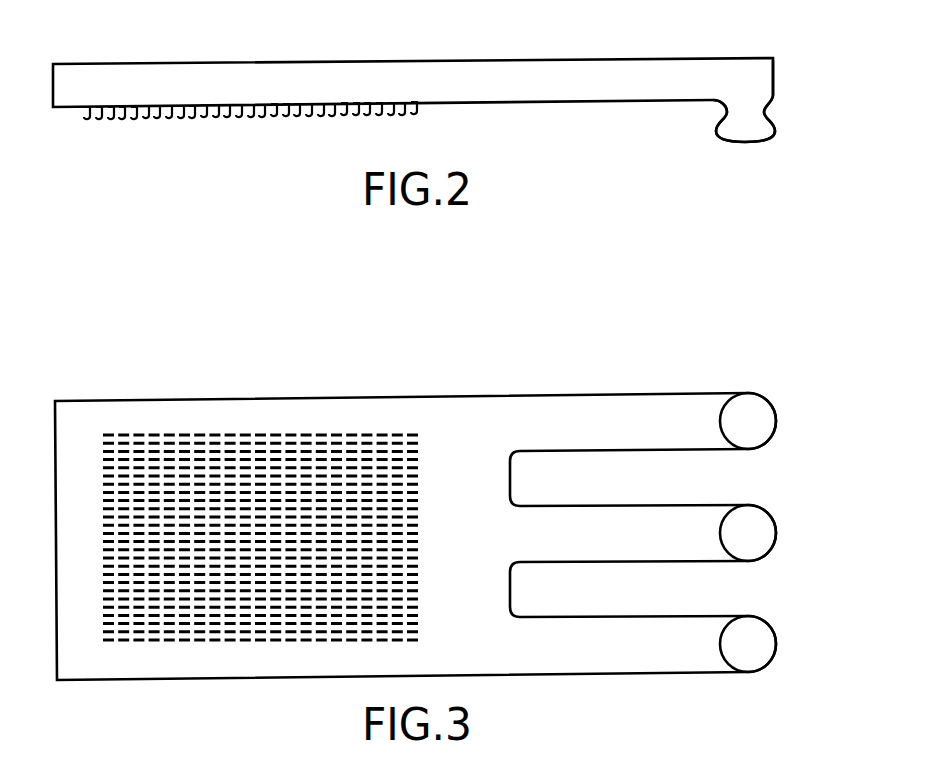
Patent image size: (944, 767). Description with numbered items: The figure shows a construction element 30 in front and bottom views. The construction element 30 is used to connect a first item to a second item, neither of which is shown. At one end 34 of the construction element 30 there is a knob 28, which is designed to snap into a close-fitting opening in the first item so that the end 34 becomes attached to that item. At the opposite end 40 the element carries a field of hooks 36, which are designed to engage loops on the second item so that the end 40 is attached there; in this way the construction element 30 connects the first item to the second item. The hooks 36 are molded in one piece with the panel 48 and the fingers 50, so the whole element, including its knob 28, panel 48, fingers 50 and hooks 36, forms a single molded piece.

In FIG. 2, the knob 28 is at (776, 127).
In FIG. 3, the knob 28 is at (769, 510).
In FIG. 2, the construction element 30 is at (775, 67).
In FIG. 3, the construction element 30 is at (768, 397).
In FIG. 2, the end 34 is at (765, 57).
In FIG. 3, the end 34 is at (688, 395).
In FIG. 2, the hooks 36 is at (122, 118).
In FIG. 3, the hooks 36 is at (338, 432).
In FIG. 2, the end 40 is at (78, 63).
In FIG. 3, the end 40 is at (78, 416).
In FIG. 2, the panel 48 is at (511, 77).
In FIG. 3, the panel 48 is at (470, 414).
In FIG. 2, the fingers 50 is at (705, 68).
In FIG. 3, the fingers 50 is at (624, 408).